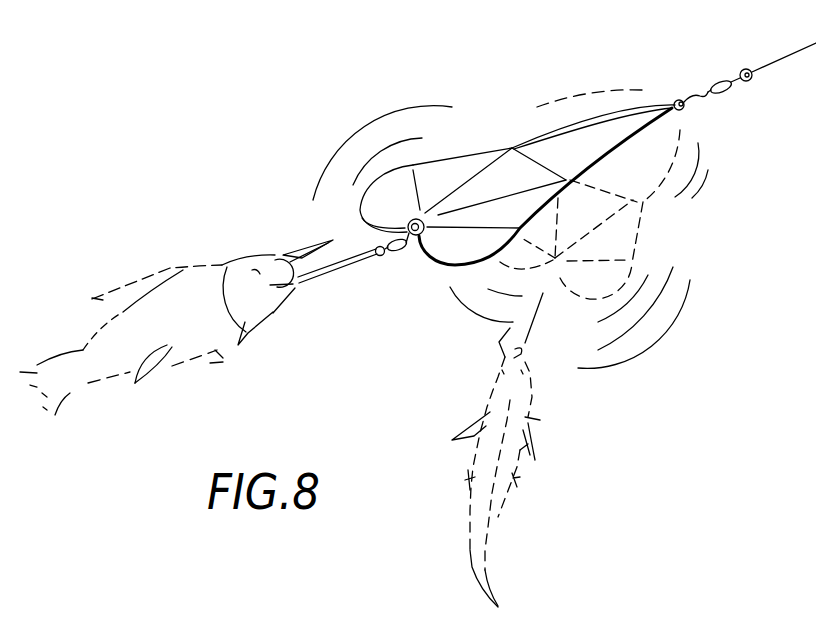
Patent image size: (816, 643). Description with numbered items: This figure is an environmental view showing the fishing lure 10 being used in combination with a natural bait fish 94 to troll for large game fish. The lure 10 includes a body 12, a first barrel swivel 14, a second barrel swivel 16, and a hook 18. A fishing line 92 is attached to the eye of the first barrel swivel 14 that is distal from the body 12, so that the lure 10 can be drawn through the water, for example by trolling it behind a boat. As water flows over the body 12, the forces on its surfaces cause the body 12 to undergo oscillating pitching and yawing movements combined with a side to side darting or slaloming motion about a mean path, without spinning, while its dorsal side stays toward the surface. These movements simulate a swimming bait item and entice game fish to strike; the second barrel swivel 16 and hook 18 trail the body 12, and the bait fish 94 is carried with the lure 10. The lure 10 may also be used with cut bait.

The fishing lure 10 is at (499, 108).
The body 12 is at (585, 143).
The first barrel swivel 14 is at (727, 88).
The second barrel swivel 16 is at (400, 249).
The hook 18 is at (334, 282).
The fishing line 92 is at (760, 70).
The natural bait fish 94 is at (235, 260).